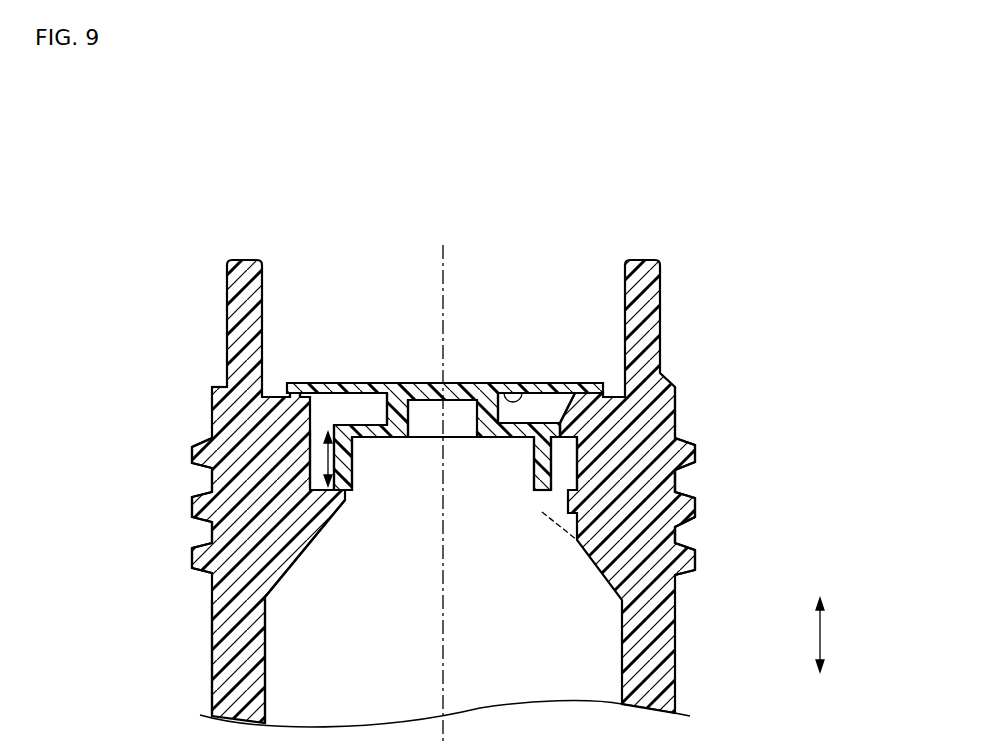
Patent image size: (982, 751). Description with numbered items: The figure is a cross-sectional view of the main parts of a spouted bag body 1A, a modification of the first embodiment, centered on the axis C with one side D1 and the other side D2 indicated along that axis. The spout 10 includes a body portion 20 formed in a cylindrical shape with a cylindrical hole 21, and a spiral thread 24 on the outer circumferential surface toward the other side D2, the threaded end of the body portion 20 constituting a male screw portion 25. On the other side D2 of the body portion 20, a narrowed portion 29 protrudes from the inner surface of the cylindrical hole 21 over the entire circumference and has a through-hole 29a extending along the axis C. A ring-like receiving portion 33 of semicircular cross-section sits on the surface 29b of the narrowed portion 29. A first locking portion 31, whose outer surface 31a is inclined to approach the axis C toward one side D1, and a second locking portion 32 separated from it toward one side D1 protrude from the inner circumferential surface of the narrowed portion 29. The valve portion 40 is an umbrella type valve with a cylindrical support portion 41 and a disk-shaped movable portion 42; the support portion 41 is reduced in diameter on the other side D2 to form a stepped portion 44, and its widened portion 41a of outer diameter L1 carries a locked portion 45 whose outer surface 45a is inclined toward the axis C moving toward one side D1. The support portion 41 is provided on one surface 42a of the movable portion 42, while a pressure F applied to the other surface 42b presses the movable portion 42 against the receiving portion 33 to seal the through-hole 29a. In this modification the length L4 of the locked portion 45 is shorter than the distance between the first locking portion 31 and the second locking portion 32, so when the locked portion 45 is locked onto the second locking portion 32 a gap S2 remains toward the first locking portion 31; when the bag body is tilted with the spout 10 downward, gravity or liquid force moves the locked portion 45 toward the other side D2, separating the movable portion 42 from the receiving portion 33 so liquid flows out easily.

The spouted bag body 1A is at (106, 196).
The spout 10 is at (176, 297).
The body portion 20 is at (672, 290).
The cylindrical hole 21 is at (262, 663).
The thread 24 is at (697, 506).
The male screw portion 25 is at (705, 427).
The narrowed portion 29 is at (297, 466).
The through-hole 29a is at (325, 448).
The surface 29b is at (276, 382).
The first locking portion 31 is at (569, 420).
The outer surface 31a is at (560, 416).
The second locking portion 32 is at (334, 507).
The receiving portion 33 is at (296, 394).
The valve portion 40 is at (420, 284).
The support portion 41 is at (392, 408).
The widened portion 41a is at (349, 488).
The movable portion 42 is at (353, 383).
The one surface 42a is at (506, 399).
The other surface 42b is at (510, 392).
The stepped portion 44 is at (356, 428).
The locked portion 45 is at (553, 452).
The outer surface 45a is at (556, 478).
The axis C is at (446, 262).
The pressure F is at (425, 372).
The outer diameter L1 is at (442, 445).
The length L4 is at (340, 463).
The gap S2 is at (576, 432).
The one side D1 is at (820, 681).
The other side D2 is at (820, 615).